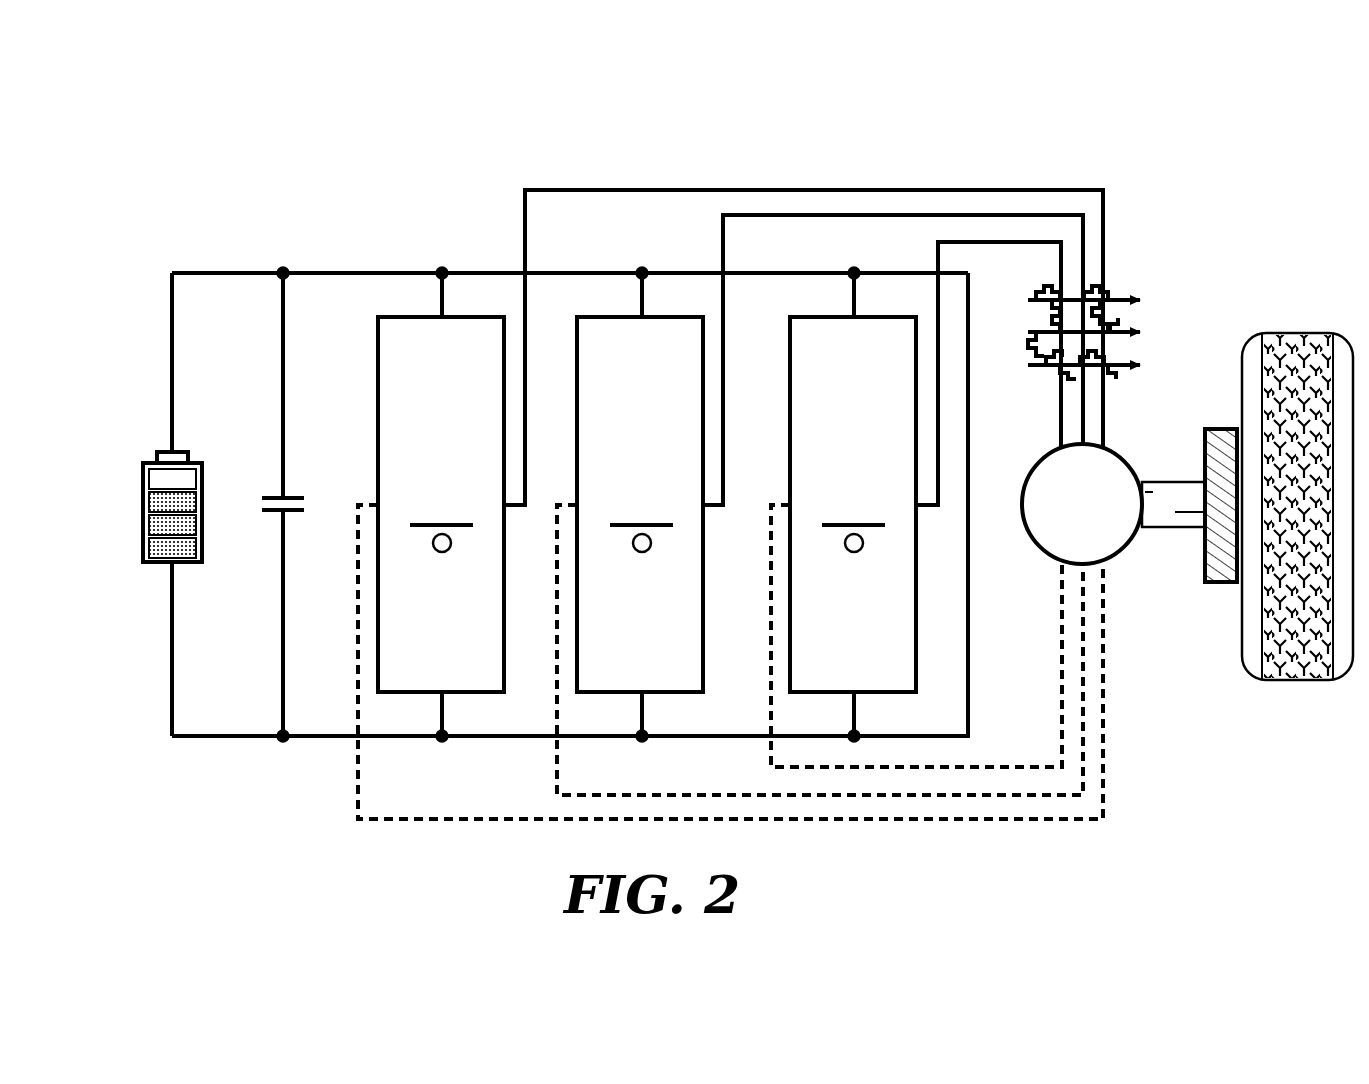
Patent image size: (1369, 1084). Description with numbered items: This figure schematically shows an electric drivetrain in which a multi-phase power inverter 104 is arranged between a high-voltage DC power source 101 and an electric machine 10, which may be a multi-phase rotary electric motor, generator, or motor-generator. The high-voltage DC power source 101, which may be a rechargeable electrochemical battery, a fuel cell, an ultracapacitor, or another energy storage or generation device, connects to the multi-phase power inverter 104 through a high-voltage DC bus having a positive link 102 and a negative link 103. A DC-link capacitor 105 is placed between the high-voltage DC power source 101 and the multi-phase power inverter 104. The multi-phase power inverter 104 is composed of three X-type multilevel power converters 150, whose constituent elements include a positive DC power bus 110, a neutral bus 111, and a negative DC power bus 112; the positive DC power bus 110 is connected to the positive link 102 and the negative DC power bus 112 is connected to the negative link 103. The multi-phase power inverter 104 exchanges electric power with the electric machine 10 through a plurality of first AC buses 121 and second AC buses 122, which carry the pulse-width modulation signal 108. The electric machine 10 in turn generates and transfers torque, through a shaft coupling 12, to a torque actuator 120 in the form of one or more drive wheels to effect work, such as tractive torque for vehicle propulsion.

The electric machine 10 is at (1064, 522).
The drive shaft / gearbox 12 is at (1163, 480).
The high-voltage DC power source 101 is at (140, 512).
The positive link 102 is at (172, 353).
The negative link 103 is at (172, 647).
The multi-phase power inverter 104 is at (647, 409).
The DC-link capacitor 105 is at (285, 494).
The pulse-width modulation signal 108 is at (1122, 288).
The positive DC power bus 110 is at (380, 268).
The neutral bus 111 is at (420, 612).
The negative DC power bus 112 is at (322, 742).
The torque actuator 120 is at (1293, 333).
The first AC buses 121 is at (962, 238).
The second AC buses 122 is at (1070, 714).
The X-type multilevel power converter 150 is at (420, 407).